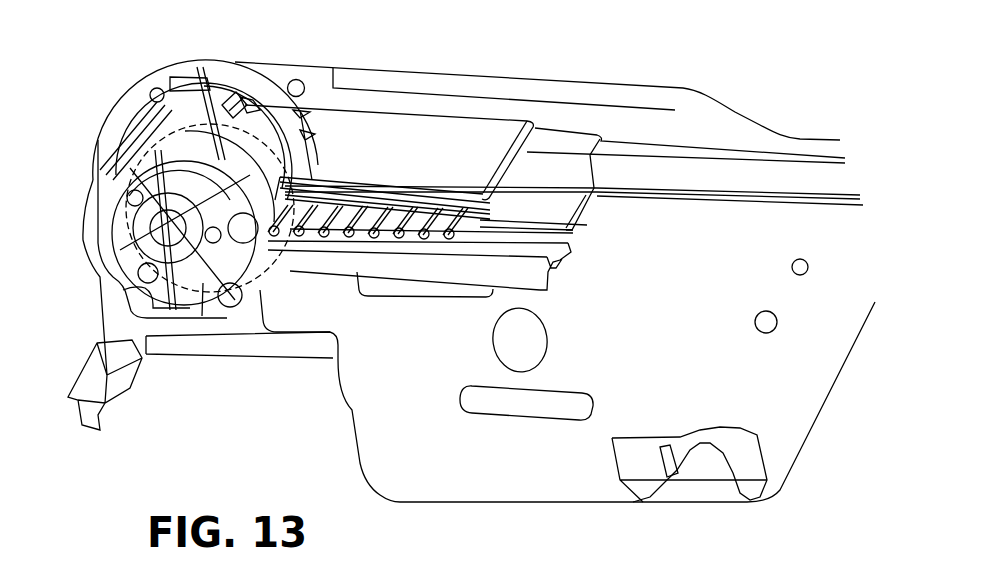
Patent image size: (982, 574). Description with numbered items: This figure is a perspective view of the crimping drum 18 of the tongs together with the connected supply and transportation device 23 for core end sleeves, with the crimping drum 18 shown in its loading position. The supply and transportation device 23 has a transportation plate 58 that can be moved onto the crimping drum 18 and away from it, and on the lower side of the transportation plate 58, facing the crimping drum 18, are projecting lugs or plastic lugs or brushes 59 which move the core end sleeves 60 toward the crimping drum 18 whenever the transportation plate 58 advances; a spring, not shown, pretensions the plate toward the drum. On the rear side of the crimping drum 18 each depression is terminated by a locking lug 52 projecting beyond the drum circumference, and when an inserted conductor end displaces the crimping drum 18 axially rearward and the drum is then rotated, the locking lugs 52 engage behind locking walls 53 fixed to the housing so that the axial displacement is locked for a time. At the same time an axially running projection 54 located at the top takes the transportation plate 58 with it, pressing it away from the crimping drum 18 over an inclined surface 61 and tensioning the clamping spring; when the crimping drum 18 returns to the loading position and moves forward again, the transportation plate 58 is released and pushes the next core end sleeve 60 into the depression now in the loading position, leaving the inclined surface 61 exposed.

The crimping drum 18 is at (190, 309).
The supply and transportation device 23 is at (527, 116).
The locking lug 52 is at (148, 90).
The locking wall 53 is at (185, 78).
The projection 54 is at (240, 107).
The transportation plate 58 is at (427, 133).
The projecting lugs or brushes 59 is at (470, 225).
The core end sleeves 60 is at (358, 240).
The inclined surface 61 is at (247, 103).